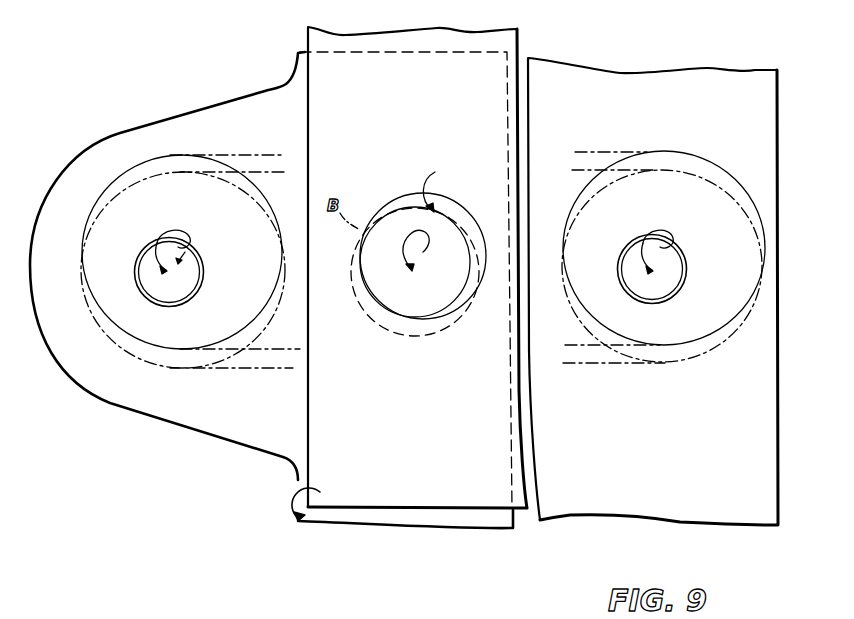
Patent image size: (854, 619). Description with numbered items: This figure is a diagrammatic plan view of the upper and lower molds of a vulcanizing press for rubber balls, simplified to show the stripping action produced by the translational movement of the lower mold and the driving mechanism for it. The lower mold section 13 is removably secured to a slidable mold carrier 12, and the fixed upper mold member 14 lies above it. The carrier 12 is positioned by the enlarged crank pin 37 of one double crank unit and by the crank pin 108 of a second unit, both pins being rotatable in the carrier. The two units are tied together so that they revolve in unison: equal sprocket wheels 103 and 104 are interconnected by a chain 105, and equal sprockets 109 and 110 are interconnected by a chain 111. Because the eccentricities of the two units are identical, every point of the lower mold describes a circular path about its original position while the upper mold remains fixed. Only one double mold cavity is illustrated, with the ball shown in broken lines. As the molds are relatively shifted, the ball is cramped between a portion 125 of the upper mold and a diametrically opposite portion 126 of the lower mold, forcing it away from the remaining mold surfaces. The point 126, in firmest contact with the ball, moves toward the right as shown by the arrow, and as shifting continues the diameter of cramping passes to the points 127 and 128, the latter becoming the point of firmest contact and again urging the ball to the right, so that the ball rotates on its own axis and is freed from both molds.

The mold carrier 12 is at (126, 410).
The lower mold section 13 is at (420, 522).
The mounting plate 14 is at (475, 497).
The crank pin 37 is at (163, 293).
The sprocket wheel 103 is at (128, 168).
The sprocket wheel 104 is at (688, 152).
The chain 105 is at (278, 132).
The crank pin 108 is at (661, 287).
The sprocket 109 is at (117, 203).
The sprocket 110 is at (700, 178).
The chain 111 is at (250, 170).
The portion of the upper mold 125 is at (400, 315).
The portion of the lower mold 126 is at (436, 210).
The point of cramping 127 is at (440, 315).
The point of cramping 128 is at (400, 208).